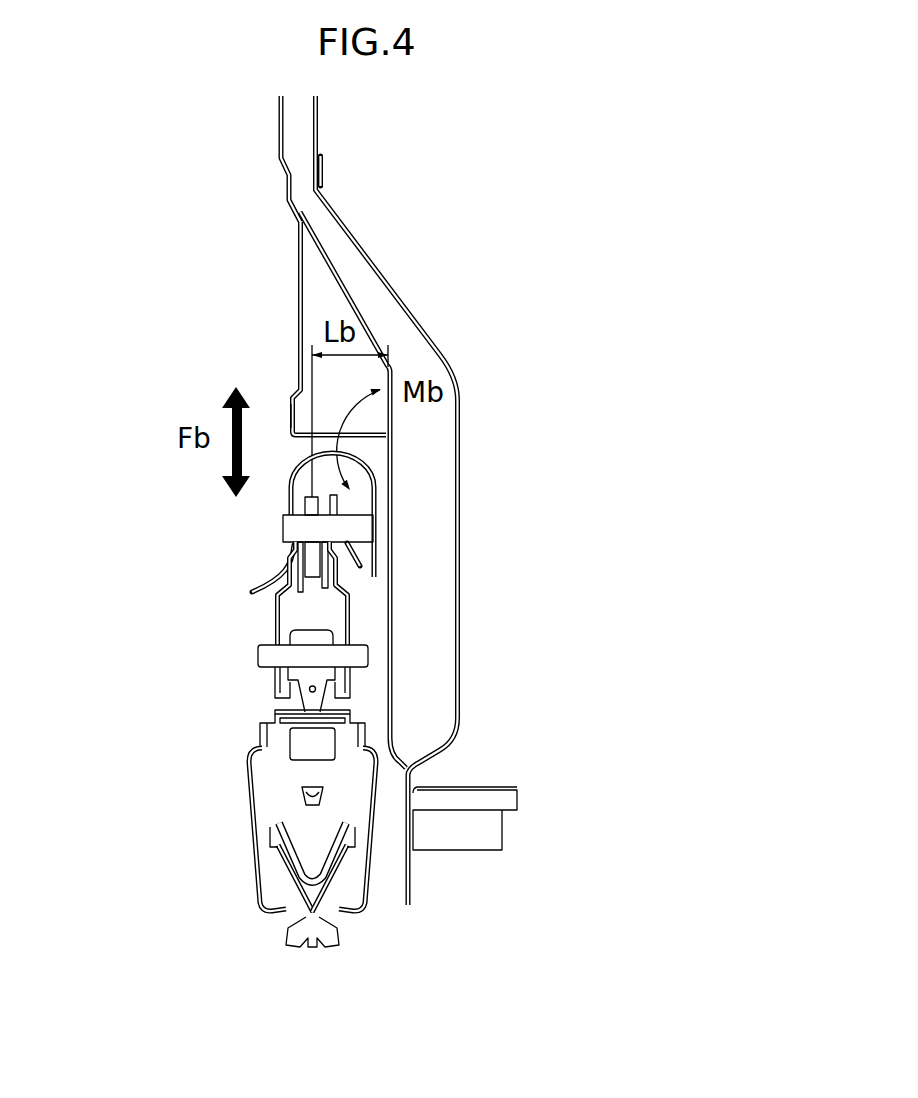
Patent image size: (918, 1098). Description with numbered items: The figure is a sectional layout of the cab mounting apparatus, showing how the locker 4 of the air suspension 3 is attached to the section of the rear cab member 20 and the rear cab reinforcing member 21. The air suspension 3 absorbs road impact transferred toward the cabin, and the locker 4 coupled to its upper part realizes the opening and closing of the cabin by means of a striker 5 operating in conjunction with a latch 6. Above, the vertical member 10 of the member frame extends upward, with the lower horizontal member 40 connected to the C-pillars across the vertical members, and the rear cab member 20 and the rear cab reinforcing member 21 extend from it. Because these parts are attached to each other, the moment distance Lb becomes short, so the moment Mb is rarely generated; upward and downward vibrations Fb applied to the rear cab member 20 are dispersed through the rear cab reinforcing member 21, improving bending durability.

The vertical member 10 is at (292, 128).
The rear cab member 20 is at (298, 360).
The rear cab reinforcing member 21 is at (437, 650).
The lower horizontal member 40 is at (318, 140).
The locker 4 is at (434, 522).
The striker 5 is at (377, 482).
The latch 6 is at (358, 530).
The air suspension 3 is at (268, 797).